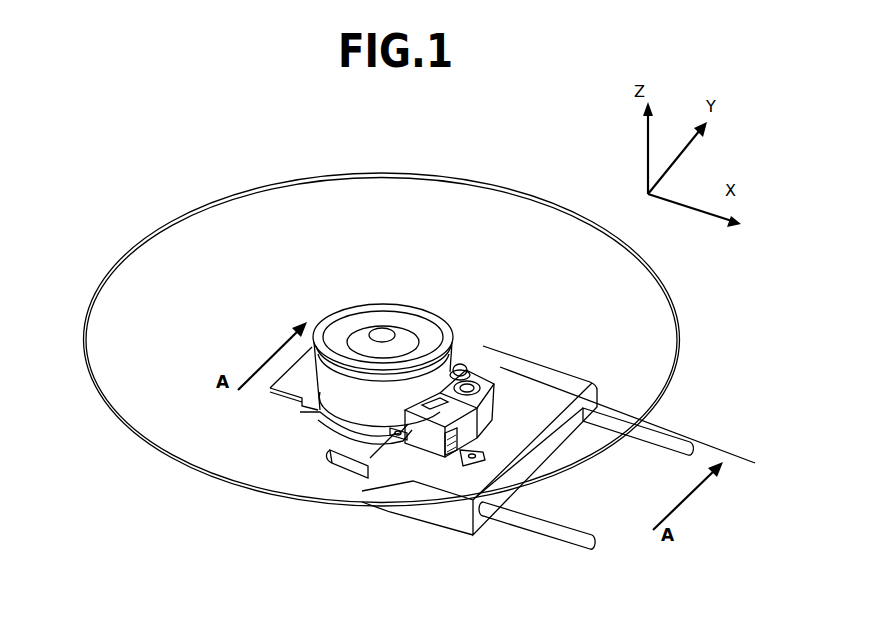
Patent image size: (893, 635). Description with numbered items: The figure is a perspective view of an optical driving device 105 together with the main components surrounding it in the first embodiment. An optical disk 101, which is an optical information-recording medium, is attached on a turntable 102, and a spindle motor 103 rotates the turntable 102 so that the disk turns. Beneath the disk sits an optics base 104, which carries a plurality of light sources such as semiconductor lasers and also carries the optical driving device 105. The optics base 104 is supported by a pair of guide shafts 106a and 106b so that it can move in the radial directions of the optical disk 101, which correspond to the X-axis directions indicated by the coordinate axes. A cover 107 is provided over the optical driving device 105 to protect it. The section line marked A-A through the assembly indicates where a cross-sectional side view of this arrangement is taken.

The optical disk 101 is at (153, 292).
The turntable 102 is at (320, 322).
The spindle motor 103 is at (307, 412).
The optics base 104 is at (366, 468).
The optical driving device 105 is at (466, 362).
The guide shaft 106a is at (703, 395).
The guide shaft 106b is at (590, 549).
The cover 107 is at (502, 360).